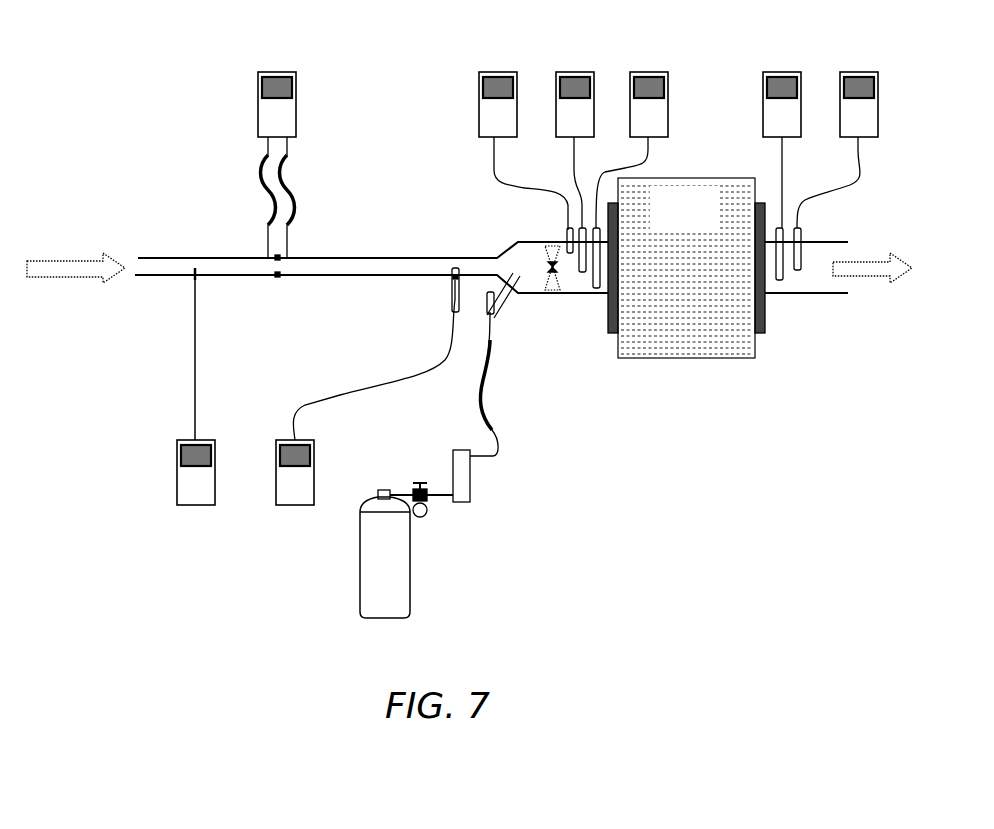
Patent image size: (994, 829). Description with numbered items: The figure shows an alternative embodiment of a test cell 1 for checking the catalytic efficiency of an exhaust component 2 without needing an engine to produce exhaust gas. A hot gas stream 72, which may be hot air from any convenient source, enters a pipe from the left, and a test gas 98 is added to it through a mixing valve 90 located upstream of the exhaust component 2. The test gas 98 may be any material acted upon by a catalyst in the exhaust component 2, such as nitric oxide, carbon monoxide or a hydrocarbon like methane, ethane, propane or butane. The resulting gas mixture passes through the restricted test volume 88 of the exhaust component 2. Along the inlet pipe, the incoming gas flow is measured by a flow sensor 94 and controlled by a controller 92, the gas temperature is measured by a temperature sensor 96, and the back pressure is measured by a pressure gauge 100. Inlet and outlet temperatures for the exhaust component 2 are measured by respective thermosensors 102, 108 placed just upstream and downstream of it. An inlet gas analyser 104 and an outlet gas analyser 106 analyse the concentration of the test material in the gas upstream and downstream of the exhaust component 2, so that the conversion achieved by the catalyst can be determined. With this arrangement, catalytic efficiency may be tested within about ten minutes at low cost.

The test cell 1 is at (740, 361).
The exhaust component 2 is at (743, 345).
The hot gas stream 72 is at (70, 250).
The restricted test volume 88 is at (678, 267).
The mixing valve 90 is at (553, 290).
The controller 92 is at (177, 498).
The flow sensor 94 is at (260, 121).
The temperature sensor 96 is at (288, 495).
The test gas 98 is at (378, 542).
The pressure gauge 100 is at (487, 123).
The inlet thermosensor 102 is at (576, 122).
The inlet gas analyser 104 is at (658, 128).
The outlet gas analyser 106 is at (783, 118).
The outlet thermosensor 108 is at (856, 115).